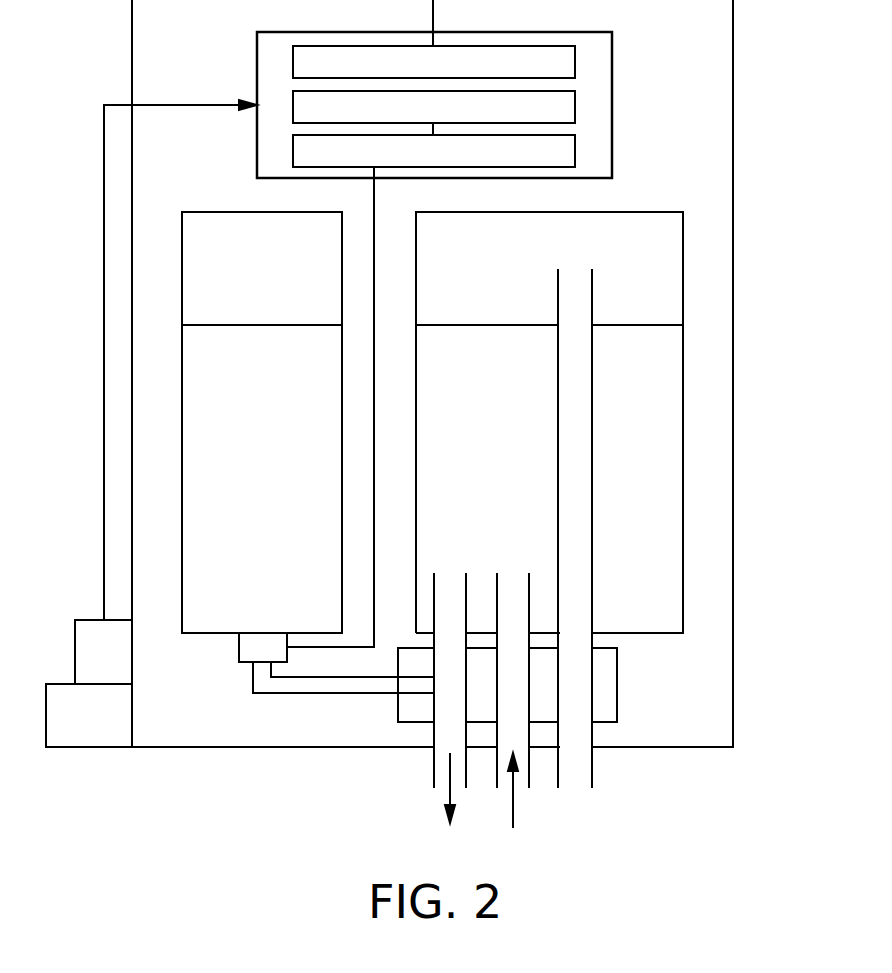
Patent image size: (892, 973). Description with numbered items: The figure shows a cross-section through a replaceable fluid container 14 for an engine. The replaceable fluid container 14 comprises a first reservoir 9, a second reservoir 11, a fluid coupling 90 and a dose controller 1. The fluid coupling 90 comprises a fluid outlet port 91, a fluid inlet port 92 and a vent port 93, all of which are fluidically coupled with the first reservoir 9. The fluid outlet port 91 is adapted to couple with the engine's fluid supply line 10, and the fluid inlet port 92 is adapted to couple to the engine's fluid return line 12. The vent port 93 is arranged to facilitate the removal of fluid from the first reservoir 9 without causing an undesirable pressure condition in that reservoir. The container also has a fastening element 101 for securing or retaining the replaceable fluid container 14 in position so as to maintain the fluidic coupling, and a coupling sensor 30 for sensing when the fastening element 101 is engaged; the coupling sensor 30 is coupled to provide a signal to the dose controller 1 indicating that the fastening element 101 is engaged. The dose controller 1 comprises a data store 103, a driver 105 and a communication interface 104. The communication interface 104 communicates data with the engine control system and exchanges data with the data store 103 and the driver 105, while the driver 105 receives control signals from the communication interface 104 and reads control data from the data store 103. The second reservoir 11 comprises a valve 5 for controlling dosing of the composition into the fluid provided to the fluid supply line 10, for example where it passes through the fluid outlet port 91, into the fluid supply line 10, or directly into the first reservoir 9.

The dose controller 1 is at (624, 82).
The data store 103 is at (414, 119).
The communication interface 104 is at (414, 74).
The driver 105 is at (414, 163).
The valve 5 is at (255, 657).
The first reservoir 9 is at (645, 200).
The fluid supply line 10 is at (438, 853).
The second reservoir 11 is at (209, 200).
The fluid return line 12 is at (500, 853).
The replaceable fluid container 14 is at (756, 404).
The coupling sensor 30 is at (90, 665).
The fluid coupling 90 is at (629, 691).
The fluid outlet port 91 is at (437, 697).
The fluid inlet port 92 is at (499, 697).
The vent port 93 is at (562, 372).
The fastening element 101 is at (69, 726).